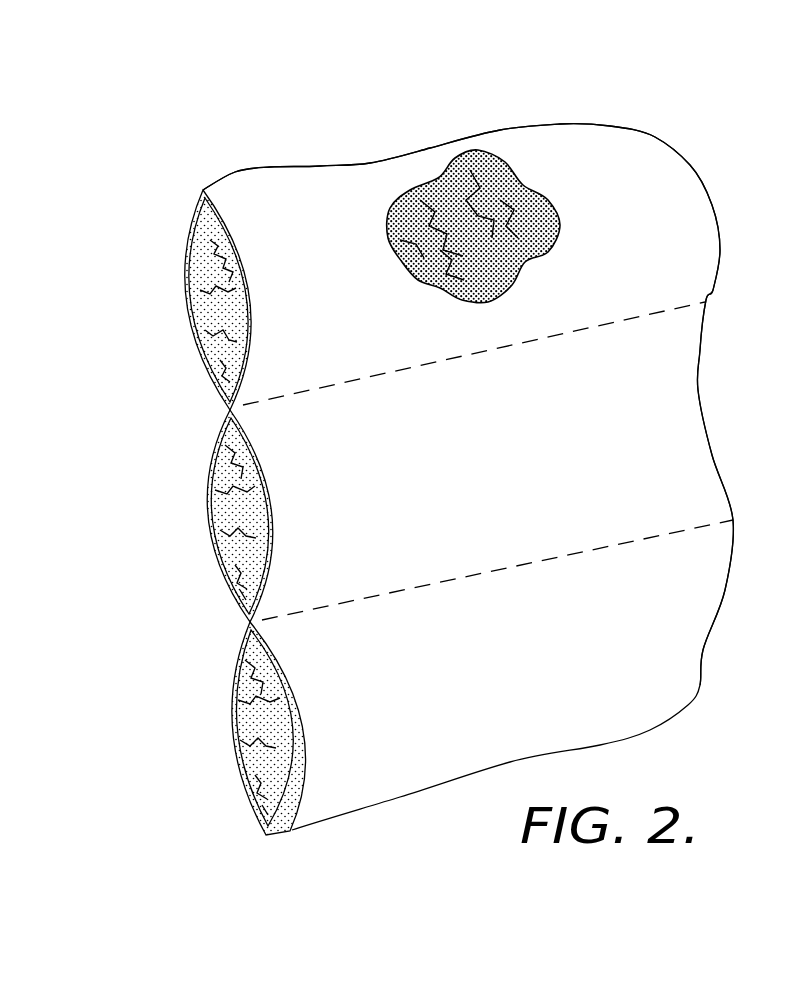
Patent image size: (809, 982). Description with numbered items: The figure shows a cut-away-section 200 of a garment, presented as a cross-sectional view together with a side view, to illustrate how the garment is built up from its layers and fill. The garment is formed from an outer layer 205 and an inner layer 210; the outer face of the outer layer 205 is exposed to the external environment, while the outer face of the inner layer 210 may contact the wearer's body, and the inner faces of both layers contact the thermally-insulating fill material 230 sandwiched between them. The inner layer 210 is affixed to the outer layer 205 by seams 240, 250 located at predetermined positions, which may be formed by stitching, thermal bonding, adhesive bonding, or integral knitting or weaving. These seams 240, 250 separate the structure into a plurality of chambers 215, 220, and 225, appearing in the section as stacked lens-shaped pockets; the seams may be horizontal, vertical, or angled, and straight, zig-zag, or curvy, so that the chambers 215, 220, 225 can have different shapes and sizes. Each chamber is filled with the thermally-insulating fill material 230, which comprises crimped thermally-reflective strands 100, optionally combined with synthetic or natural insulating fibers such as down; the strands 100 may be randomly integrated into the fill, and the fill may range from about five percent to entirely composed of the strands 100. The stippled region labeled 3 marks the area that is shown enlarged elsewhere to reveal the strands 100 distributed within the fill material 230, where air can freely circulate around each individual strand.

The cut-away-section 200 is at (619, 58).
The inner layer 210 is at (271, 200).
The chamber 215 is at (647, 163).
The chamber 220 is at (676, 390).
The chamber 225 is at (690, 615).
The seam 240 is at (666, 310).
The seam 250 is at (690, 522).
The particulate material / stippled region 3 is at (487, 152).
The outer layer 205 is at (186, 298).
The thermally-reflective strands 100 is at (224, 561).
The thermally-insulating fill material 230 is at (250, 618).